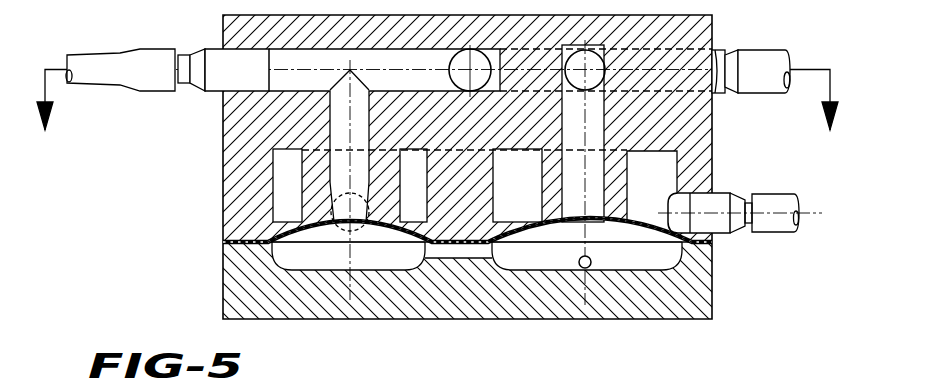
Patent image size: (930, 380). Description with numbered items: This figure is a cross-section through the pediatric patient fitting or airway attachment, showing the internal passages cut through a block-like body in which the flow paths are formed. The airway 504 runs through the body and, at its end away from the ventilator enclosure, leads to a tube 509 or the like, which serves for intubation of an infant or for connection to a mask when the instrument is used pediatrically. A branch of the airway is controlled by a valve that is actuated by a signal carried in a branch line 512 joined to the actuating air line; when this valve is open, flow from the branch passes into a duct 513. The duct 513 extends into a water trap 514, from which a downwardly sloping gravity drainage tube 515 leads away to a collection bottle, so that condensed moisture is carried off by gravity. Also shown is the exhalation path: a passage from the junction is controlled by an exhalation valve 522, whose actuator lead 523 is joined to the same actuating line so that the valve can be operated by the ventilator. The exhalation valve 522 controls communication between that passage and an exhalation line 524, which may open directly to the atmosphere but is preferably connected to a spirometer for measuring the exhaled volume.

The airway 504 is at (755, 53).
The tube 509 is at (160, 34).
The branch line 512 is at (580, 268).
The duct 513 is at (219, 167).
The water trap 514 is at (656, 182).
The gravity drainage tube 515 is at (772, 236).
The exhalation valve 522 is at (383, 262).
The actuator lead 523 is at (446, 266).
The exhalation line 524 is at (337, 203).